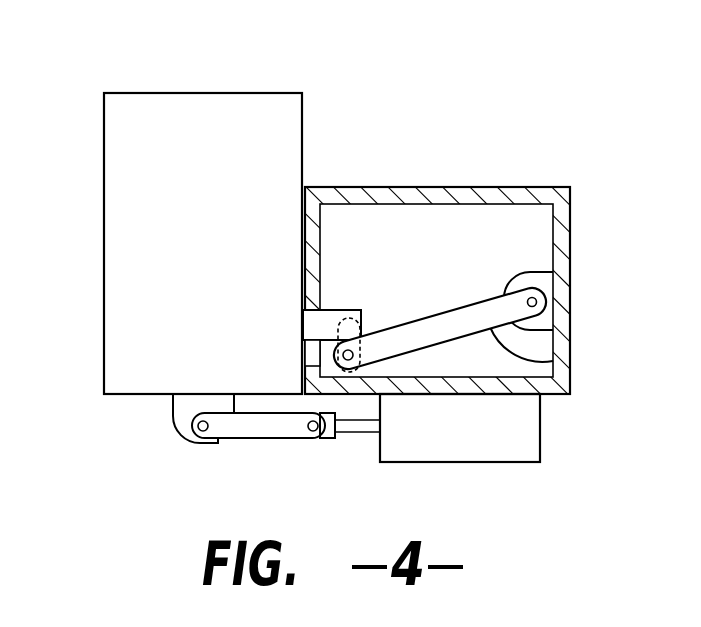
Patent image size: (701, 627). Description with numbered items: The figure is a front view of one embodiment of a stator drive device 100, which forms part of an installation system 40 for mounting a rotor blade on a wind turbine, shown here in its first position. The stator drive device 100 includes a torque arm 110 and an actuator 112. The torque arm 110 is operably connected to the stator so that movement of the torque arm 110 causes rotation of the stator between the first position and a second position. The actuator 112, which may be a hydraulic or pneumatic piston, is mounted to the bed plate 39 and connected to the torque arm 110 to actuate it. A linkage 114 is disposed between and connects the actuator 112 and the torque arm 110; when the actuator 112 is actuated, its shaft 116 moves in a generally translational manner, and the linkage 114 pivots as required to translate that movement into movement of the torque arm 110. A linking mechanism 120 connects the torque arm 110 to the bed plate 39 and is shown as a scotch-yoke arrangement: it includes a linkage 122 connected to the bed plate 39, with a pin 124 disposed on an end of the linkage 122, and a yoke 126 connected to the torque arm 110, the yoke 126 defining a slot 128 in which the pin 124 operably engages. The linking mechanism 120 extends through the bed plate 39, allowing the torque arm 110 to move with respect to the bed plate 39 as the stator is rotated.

The bed plate 39 is at (570, 212).
The installation system 40 is at (568, 97).
The stator drive device 100 is at (130, 418).
The torque arm 110 is at (120, 203).
The actuator 112 is at (517, 432).
The linkage 114 is at (260, 440).
The shaft 116 is at (358, 437).
The linking mechanism 120 is at (450, 290).
The linkage 122 is at (556, 343).
The pin 124 is at (356, 358).
The yoke 126 is at (330, 322).
The slot 128 is at (358, 327).